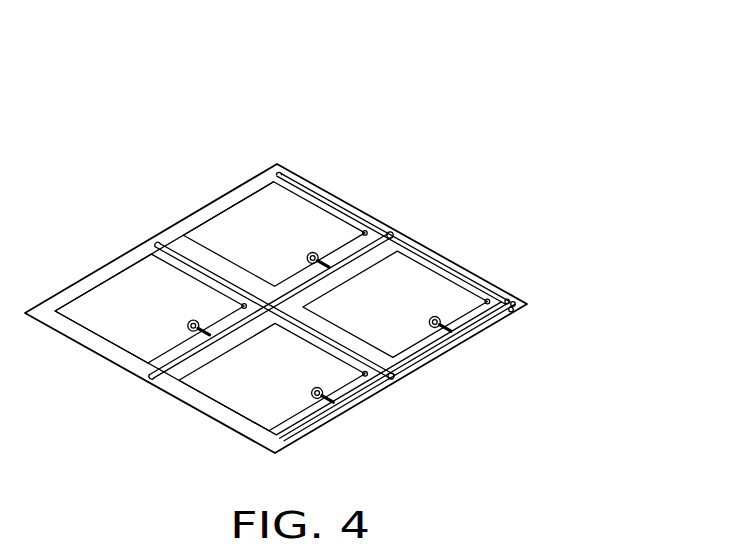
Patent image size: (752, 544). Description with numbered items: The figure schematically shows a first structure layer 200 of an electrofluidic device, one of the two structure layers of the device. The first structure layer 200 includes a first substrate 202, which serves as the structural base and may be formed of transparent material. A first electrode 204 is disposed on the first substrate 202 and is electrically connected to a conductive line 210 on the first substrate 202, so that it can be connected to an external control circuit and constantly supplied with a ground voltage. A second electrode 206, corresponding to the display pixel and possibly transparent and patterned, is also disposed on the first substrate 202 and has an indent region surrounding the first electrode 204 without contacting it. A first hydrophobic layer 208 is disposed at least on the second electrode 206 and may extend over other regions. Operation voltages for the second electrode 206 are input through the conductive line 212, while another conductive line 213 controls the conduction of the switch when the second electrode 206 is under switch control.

The first structure layer 200 is at (505, 84).
The first substrate 202 is at (441, 269).
The first electrode 204 is at (313, 254).
The second electrode 206 is at (454, 306).
The first hydrophobic layer 208 is at (454, 307).
The conductive line 210 is at (392, 230).
The conductive line 212 is at (396, 232).
The conductive line 213 is at (394, 378).